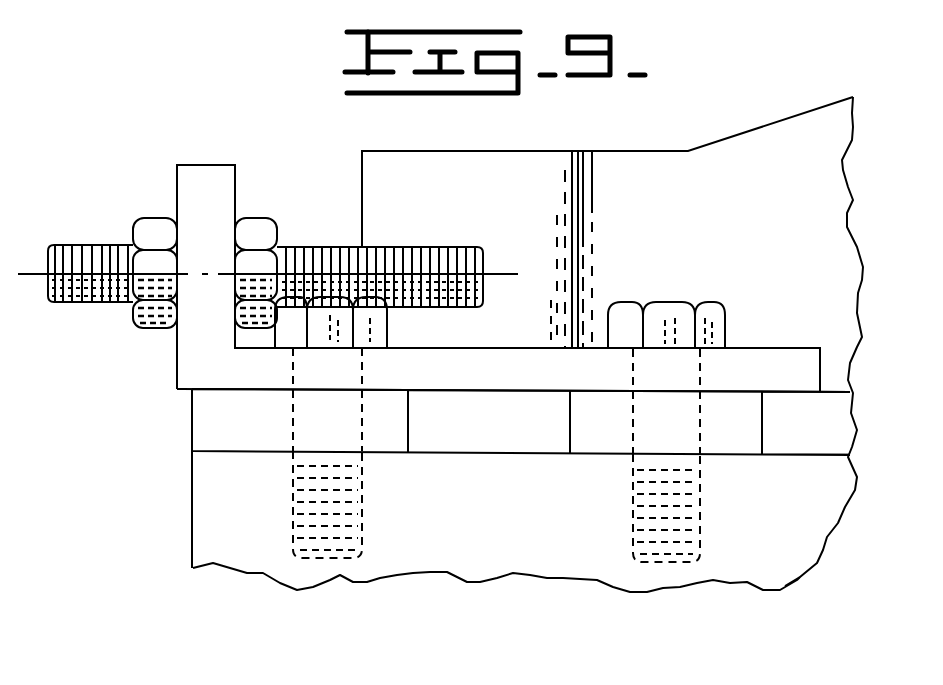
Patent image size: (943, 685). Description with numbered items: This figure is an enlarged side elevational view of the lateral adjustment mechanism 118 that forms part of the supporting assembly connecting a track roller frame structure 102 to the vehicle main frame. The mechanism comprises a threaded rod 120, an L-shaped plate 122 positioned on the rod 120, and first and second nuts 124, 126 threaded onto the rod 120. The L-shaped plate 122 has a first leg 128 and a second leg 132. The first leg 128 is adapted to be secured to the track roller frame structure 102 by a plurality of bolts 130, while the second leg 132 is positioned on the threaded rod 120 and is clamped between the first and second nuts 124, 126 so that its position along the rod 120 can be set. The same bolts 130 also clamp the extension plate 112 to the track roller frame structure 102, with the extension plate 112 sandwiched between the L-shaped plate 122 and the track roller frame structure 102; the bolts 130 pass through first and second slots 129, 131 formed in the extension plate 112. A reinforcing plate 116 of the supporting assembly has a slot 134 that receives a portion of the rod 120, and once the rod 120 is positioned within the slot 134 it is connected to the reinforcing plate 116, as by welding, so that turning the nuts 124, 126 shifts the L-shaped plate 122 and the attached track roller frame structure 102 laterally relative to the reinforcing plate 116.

The track roller frame structure 102 is at (205, 522).
The extension plate 112 is at (516, 440).
The reinforcing plate 116 is at (686, 221).
The lateral adjustment mechanism 118 is at (177, 387).
The threaded rod 120 is at (97, 310).
The L-shaped plate 122 is at (516, 384).
The first nut 124 is at (157, 227).
The second nut 126 is at (258, 227).
The first leg 128 is at (283, 377).
The first slot 129 is at (408, 422).
The bolts 130 is at (385, 322).
The second slot 131 is at (760, 440).
The second leg 132 is at (223, 183).
The slot 134 is at (440, 258).